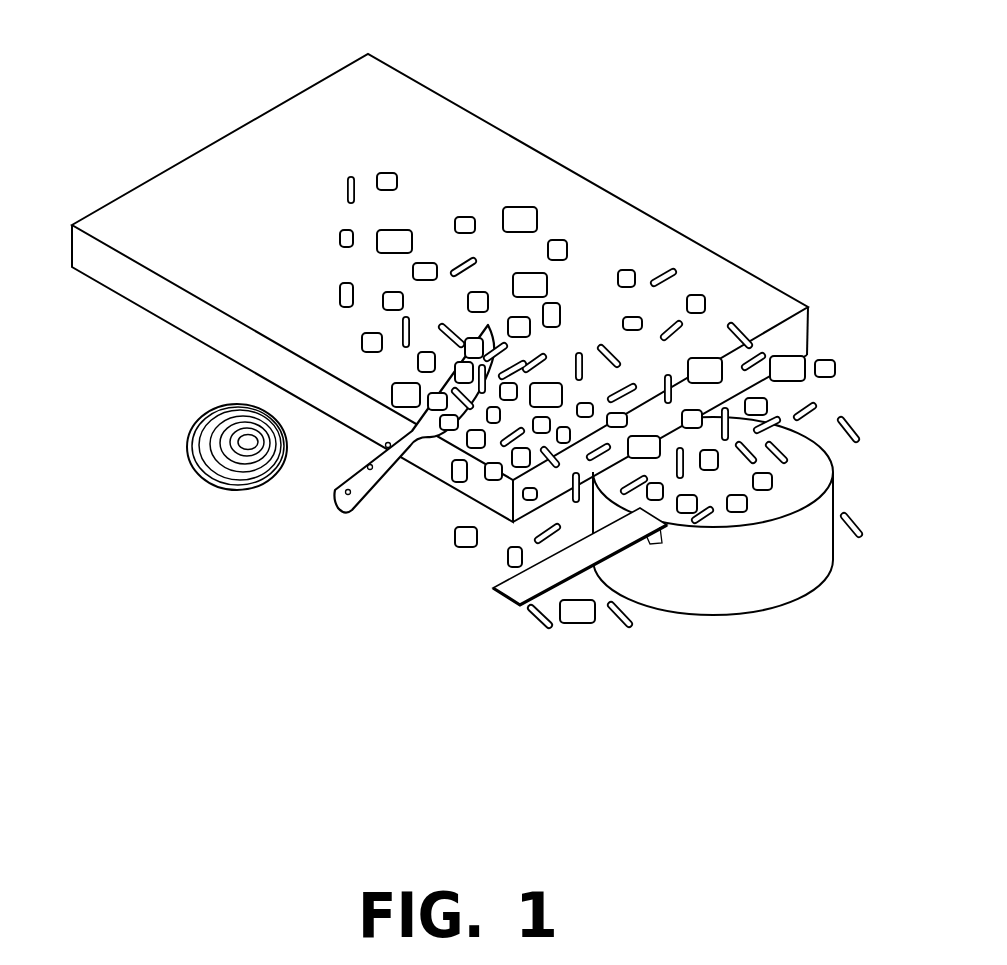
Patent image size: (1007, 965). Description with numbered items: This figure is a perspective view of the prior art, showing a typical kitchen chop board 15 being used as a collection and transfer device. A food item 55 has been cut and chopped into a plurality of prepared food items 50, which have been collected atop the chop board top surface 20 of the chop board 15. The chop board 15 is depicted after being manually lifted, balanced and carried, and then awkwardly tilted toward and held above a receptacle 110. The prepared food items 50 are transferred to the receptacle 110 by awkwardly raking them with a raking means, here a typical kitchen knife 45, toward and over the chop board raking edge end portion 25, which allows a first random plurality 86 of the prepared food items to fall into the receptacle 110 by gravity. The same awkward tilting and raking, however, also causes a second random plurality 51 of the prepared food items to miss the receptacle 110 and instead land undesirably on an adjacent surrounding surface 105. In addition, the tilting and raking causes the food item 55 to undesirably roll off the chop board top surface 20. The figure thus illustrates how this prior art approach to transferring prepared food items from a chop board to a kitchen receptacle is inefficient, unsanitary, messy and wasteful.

The kitchen chop board 15 is at (446, 265).
The chop board top surface 20 is at (263, 236).
The chop board raking edge end portion 25 is at (806, 304).
The kitchen knife 45 is at (342, 510).
The prepared food items 50 is at (550, 385).
The second random plurality of prepared food items 51 is at (543, 625).
The food item 55 is at (197, 473).
The first random plurality of prepared food items 86 is at (759, 490).
The adjacent surrounding surface 105 is at (460, 597).
The receptacle 110 is at (720, 523).